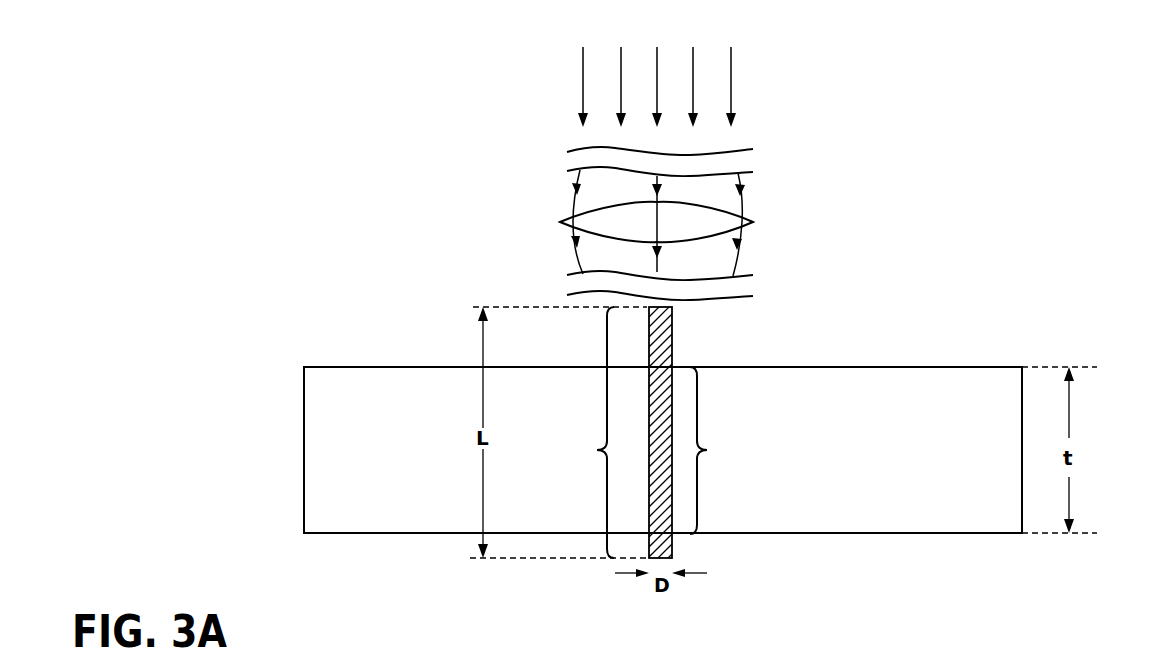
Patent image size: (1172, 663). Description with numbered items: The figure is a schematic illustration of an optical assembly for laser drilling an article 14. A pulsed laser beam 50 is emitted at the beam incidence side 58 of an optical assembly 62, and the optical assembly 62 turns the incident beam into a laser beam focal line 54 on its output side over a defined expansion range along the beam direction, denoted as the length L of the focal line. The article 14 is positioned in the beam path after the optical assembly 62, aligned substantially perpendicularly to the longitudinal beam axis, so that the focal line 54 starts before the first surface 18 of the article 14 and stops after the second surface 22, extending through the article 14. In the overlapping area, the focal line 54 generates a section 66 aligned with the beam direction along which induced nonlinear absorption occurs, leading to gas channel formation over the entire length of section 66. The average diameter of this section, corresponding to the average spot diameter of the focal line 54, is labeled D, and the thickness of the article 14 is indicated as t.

The article 14 is at (901, 386).
The first surface 18 is at (384, 356).
The second surface 22 is at (390, 541).
The pulsed laser beam 50 is at (731, 97).
The laser beam focal line 54 is at (618, 435).
The beam incidence side 58 is at (745, 203).
The optical assembly 62 is at (560, 222).
The section 66 is at (717, 450).